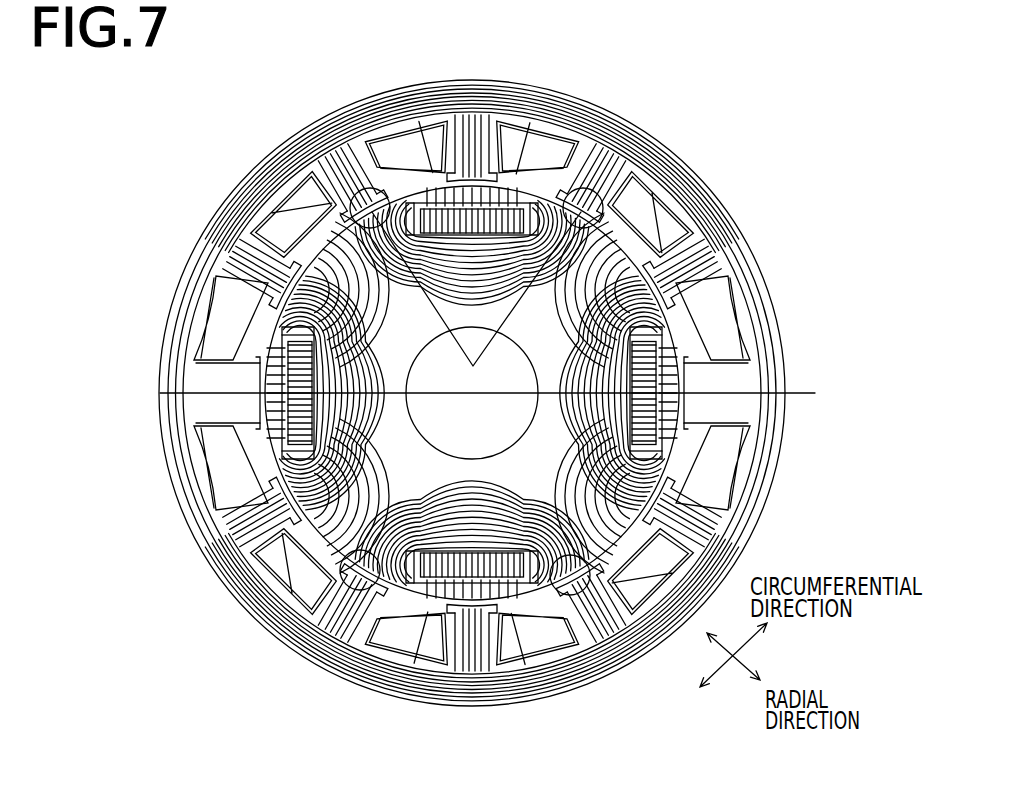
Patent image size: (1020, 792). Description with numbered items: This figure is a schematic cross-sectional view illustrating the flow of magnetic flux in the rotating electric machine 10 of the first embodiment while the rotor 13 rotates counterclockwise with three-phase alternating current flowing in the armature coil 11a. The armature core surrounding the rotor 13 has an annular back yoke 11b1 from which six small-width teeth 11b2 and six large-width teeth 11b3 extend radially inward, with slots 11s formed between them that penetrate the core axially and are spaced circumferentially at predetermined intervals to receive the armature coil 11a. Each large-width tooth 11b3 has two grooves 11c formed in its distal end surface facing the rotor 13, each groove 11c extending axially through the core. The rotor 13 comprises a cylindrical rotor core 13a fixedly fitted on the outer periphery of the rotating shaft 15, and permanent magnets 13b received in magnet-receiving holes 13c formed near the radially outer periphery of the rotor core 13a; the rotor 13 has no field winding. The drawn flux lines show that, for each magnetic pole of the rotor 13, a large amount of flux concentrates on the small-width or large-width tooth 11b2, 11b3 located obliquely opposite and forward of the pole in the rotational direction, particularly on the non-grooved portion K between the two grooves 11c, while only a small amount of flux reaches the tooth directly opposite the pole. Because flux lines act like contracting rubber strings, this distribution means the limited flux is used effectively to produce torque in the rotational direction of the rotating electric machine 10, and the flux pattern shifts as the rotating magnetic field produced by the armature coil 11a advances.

The rotating electric machine 10 is at (249, 139).
The armature coil 11a is at (674, 243).
The back yoke 11b1 is at (547, 103).
The small-width teeth 11b2 is at (470, 113).
The large-width teeth 11b3 is at (345, 172).
The slots 11s is at (705, 330).
The grooves 11c is at (400, 187).
The rotor 13 is at (237, 715).
The rotor core 13a is at (353, 432).
The permanent magnets 13b is at (297, 380).
The magnet-receiving holes 13c is at (610, 481).
The rotating shaft 15 is at (505, 425).